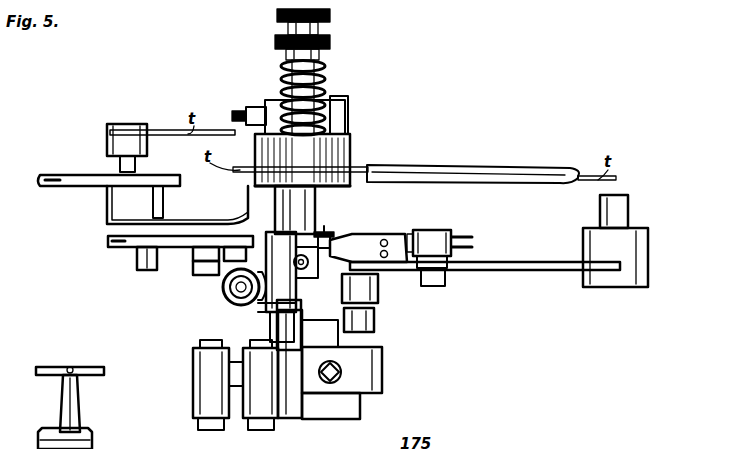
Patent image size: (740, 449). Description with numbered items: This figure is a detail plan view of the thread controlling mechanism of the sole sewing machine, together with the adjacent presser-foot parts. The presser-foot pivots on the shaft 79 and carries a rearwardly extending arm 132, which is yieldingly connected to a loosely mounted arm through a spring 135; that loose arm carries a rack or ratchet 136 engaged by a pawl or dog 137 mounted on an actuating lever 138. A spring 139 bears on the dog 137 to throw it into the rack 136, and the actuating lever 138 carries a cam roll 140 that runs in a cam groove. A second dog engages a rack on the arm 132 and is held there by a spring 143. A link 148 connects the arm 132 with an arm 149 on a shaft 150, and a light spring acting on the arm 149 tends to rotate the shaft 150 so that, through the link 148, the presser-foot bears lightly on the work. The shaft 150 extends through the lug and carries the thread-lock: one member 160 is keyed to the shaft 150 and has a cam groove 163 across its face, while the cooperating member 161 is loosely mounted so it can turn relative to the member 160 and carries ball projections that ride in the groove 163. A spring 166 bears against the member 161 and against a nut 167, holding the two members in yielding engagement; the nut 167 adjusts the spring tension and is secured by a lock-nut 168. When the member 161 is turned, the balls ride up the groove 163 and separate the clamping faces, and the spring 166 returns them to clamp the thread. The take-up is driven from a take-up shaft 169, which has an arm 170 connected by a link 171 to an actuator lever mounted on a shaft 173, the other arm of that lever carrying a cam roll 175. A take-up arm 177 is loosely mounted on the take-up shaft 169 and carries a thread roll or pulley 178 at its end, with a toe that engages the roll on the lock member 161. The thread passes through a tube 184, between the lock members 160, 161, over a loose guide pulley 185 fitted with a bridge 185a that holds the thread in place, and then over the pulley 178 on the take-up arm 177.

The shaft 79 is at (145, 270).
The rearwardly extending arm 132 is at (76, 182).
The spring 135 is at (225, 293).
The rack or ratchet 136 is at (268, 240).
The pawl or dog 137 is at (395, 234).
The actuating lever 138 is at (524, 268).
The spring 139 is at (415, 230).
The cam roll 140 is at (432, 238).
The spring 143 is at (470, 244).
The link 148 is at (205, 270).
The arm 149 is at (305, 268).
The shaft 150 is at (327, 234).
The thread-lock member 160 is at (340, 190).
The thread-lock member 161 is at (352, 162).
The cam groove 163 is at (303, 188).
The spring 166 is at (326, 80).
The nut 167 is at (331, 43).
The lock-nut 168 is at (331, 15).
The take-up shaft 169 is at (264, 308).
The arm 170 is at (234, 420).
The link 171 is at (277, 345).
The shaft 173 is at (338, 420).
The cam roll 175 is at (378, 292).
The take-up arm 177 is at (375, 319).
The thread roll or pulley 178 is at (248, 128).
The tube 184 is at (468, 170).
The loose guide pulley 185 is at (108, 145).
The bridge 185a is at (124, 128).